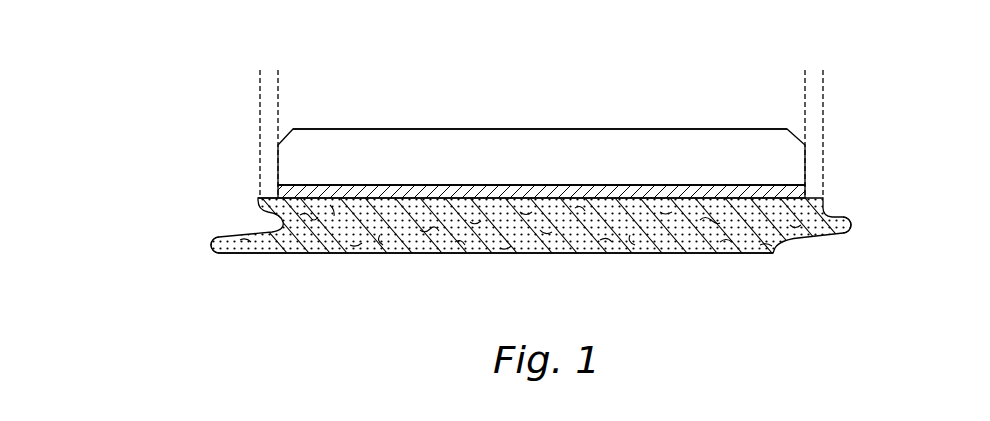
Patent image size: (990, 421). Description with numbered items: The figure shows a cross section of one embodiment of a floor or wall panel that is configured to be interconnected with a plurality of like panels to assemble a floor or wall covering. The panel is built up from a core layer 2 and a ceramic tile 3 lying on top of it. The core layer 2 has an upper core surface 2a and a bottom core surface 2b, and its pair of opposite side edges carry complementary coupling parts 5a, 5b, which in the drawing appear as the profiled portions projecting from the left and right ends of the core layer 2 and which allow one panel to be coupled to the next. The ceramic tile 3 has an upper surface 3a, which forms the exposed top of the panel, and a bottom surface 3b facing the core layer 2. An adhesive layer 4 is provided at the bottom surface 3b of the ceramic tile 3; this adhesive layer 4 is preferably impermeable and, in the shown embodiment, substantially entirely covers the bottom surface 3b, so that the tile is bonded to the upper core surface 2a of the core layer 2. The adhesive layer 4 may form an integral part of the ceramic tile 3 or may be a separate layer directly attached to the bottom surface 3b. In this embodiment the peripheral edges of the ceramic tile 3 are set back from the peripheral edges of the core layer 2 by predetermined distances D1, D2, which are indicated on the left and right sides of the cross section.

The core layer 2 is at (657, 240).
The upper core surface 2a is at (271, 190).
The bottom core surface 2b is at (313, 255).
The ceramic tile 3 is at (567, 155).
The upper surface 3a is at (425, 126).
The bottom surface 3b is at (504, 183).
The adhesive layer 4 is at (658, 193).
The coupling part 5a is at (869, 225).
The coupling part 5b is at (187, 231).
The predetermined distance D1 is at (310, 80).
The predetermined distance D2 is at (855, 80).